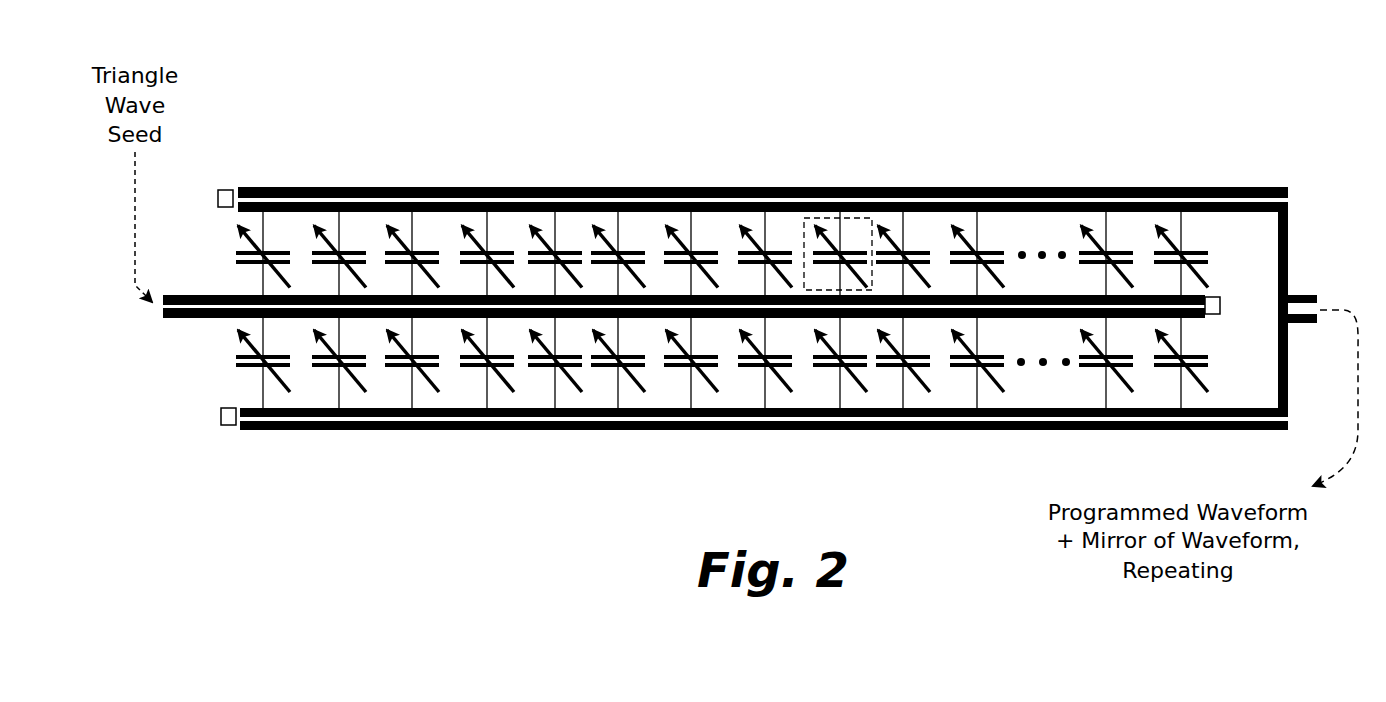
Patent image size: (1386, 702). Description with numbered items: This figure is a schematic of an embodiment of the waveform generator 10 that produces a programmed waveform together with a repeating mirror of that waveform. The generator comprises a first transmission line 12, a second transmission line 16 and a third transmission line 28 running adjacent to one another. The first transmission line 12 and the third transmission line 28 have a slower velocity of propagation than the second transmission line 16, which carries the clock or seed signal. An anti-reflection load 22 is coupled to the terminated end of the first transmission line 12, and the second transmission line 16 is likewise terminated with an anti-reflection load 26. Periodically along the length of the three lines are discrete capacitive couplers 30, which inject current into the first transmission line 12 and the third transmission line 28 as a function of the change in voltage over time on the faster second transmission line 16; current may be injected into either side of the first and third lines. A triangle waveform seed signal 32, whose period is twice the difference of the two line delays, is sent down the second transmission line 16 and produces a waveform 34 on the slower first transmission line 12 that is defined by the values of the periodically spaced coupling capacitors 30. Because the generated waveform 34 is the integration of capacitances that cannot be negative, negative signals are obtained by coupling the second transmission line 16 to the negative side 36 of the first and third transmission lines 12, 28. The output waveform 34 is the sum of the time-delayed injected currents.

The waveform generator 10 is at (1167, 75).
The first transmission line 12 is at (798, 309).
The second transmission line 16 is at (135, 282).
The anti-reflection load 22 is at (222, 190).
The anti-reflection load 26 is at (1214, 297).
The third transmission line 28 is at (180, 400).
The discrete capacitive coupler 30 is at (850, 218).
The triangle waveform seed signal 32 is at (672, 205).
The generated waveform 34 is at (1361, 396).
The negative side 36 is at (581, 187).